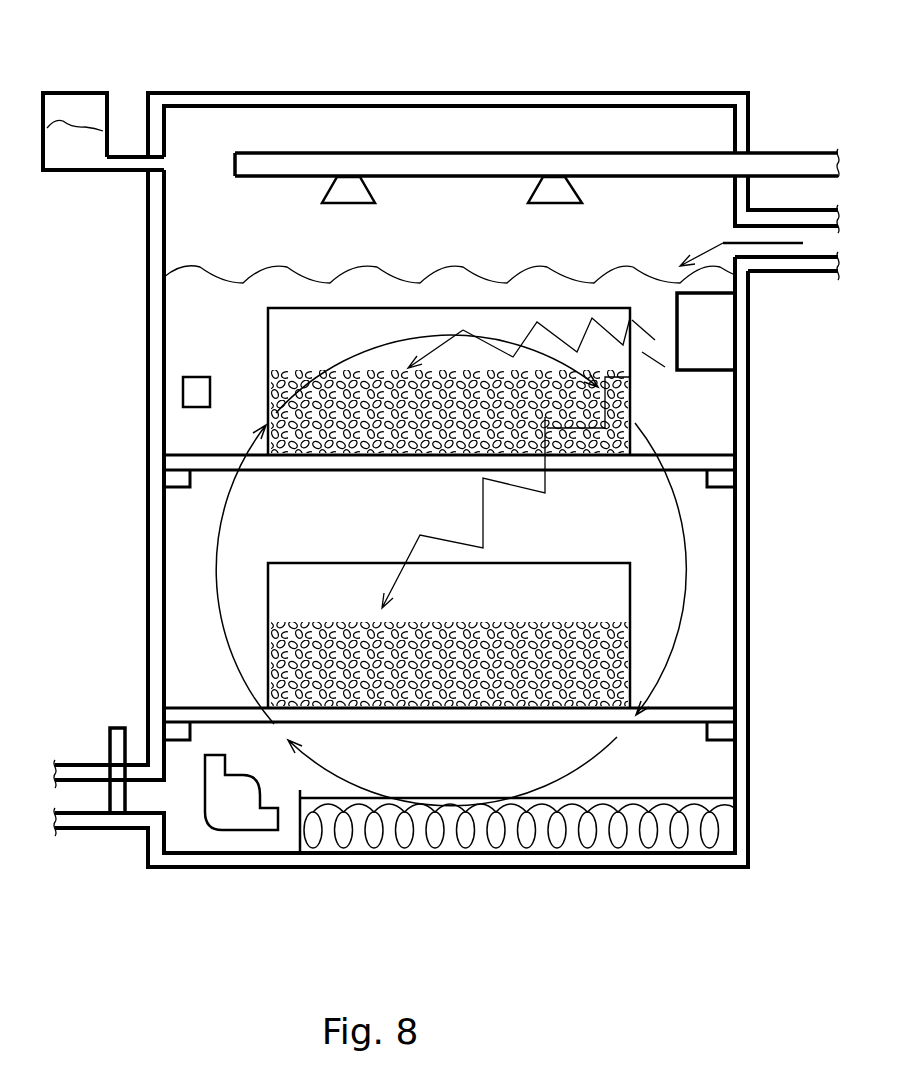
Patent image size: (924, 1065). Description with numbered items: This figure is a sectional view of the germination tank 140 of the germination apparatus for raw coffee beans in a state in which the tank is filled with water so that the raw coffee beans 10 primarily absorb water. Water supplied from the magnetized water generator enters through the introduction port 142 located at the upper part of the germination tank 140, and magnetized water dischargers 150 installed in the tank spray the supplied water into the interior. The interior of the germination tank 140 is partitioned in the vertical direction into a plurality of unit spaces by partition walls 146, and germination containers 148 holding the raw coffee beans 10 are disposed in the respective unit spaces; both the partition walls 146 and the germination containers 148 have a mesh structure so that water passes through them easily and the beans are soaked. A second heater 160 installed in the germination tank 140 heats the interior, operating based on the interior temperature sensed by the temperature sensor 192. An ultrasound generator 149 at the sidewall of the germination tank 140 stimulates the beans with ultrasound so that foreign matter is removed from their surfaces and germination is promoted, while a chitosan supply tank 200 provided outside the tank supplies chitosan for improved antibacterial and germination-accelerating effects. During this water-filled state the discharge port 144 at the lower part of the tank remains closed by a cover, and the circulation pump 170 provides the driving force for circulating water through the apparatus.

The germination tank 140 is at (224, 92).
The chitosan supply tank 200 is at (80, 92).
The magnetized water discharger 150 is at (350, 187).
The ultrasound generator 149 is at (676, 332).
The introduction port 142 is at (817, 246).
The partition wall 146 is at (698, 455).
The germination container 148 is at (267, 343).
The raw coffee beans 10 is at (267, 405).
The temperature sensor 192 is at (183, 388).
The discharge port 144 is at (92, 790).
The circulation pump 170 is at (237, 836).
The second heater 160 is at (478, 848).